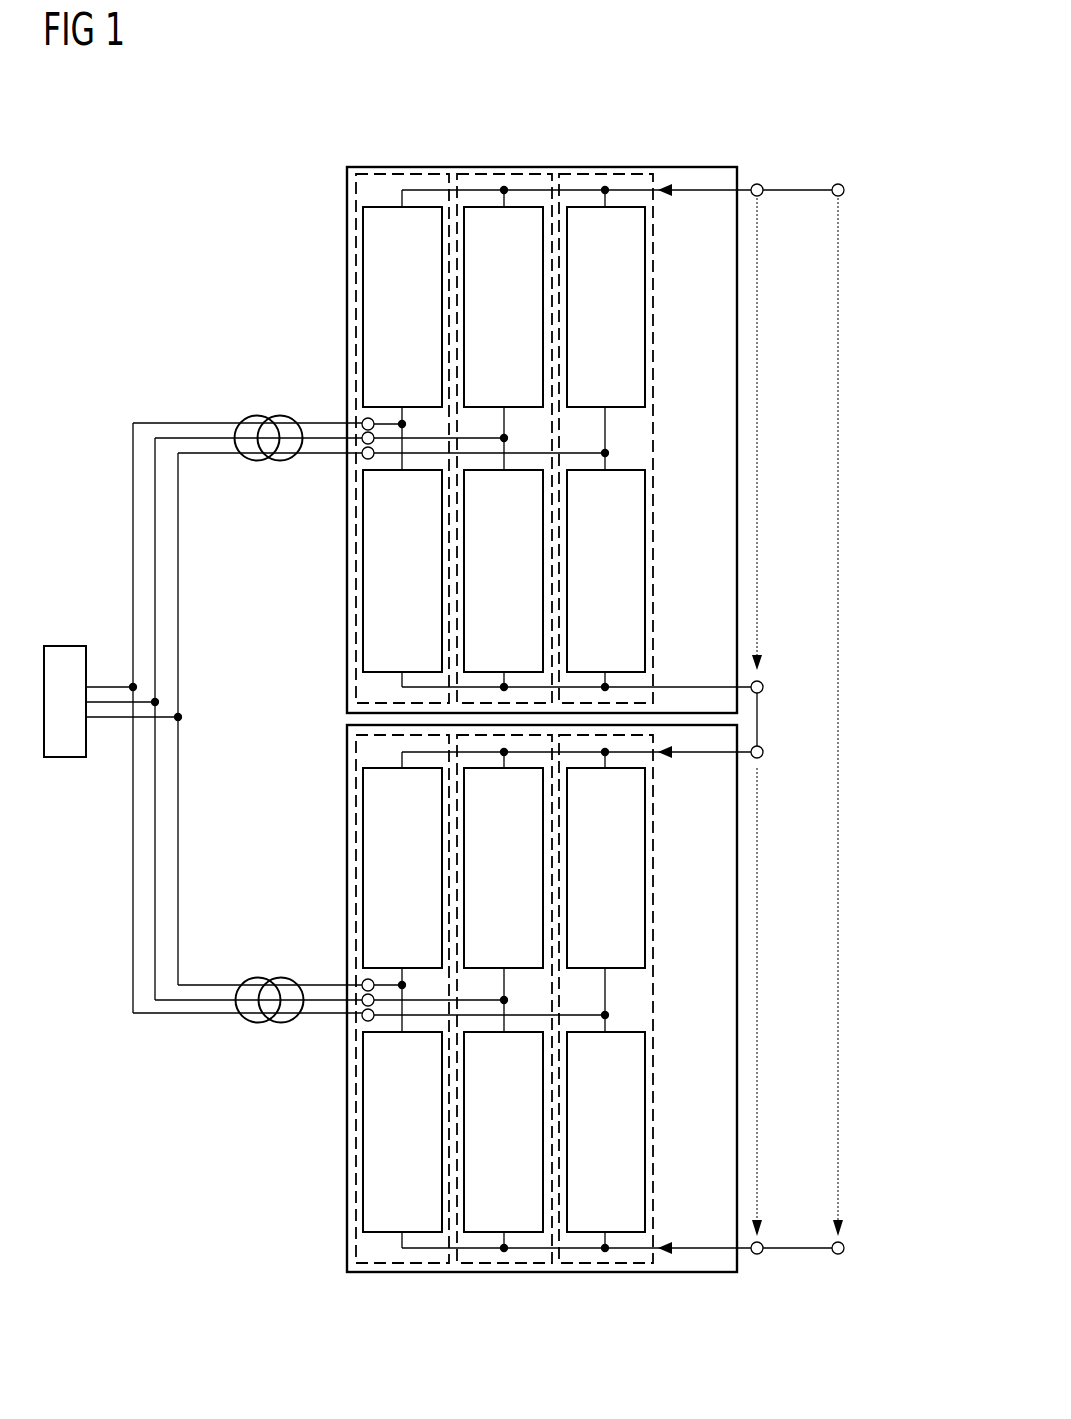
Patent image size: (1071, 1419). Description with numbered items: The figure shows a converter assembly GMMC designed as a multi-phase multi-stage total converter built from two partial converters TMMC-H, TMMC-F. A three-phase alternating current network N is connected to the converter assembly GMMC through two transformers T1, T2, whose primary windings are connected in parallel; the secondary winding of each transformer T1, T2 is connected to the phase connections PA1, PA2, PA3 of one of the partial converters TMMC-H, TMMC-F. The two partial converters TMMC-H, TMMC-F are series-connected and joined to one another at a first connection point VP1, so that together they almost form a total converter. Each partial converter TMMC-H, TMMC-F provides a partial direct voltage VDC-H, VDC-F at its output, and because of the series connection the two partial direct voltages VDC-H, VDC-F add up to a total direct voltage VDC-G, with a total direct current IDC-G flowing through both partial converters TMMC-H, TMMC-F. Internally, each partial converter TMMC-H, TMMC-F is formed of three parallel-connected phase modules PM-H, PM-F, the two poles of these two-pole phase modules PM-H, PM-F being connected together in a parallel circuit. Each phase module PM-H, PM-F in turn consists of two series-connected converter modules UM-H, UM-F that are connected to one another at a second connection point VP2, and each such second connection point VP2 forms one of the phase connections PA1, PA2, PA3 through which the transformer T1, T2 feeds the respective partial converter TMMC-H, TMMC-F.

The converter assembly GMMC is at (749, 86).
The partial converter TMMC-H is at (347, 237).
The partial converter TMMC-F is at (347, 1157).
The phase module PM-H is at (430, 174).
The phase module PM-F is at (430, 1263).
The converter module UM-H is at (380, 207).
The converter module UM-F is at (380, 1233).
The total direct current IDC-G is at (668, 187).
The partial direct voltage VDC-H is at (757, 417).
The partial direct voltage VDC-F is at (757, 1017).
The total direct voltage VDC-G is at (838, 762).
The first connection point VP1 is at (757, 717).
The second connection point VP2 is at (402, 424).
The alternating current network N is at (65, 646).
The transformer T1 is at (245, 413).
The transformer T2 is at (251, 975).
The phase connection PA1 is at (362, 422).
The phase connection PA2 is at (362, 441).
The phase connection PA3 is at (362, 457).